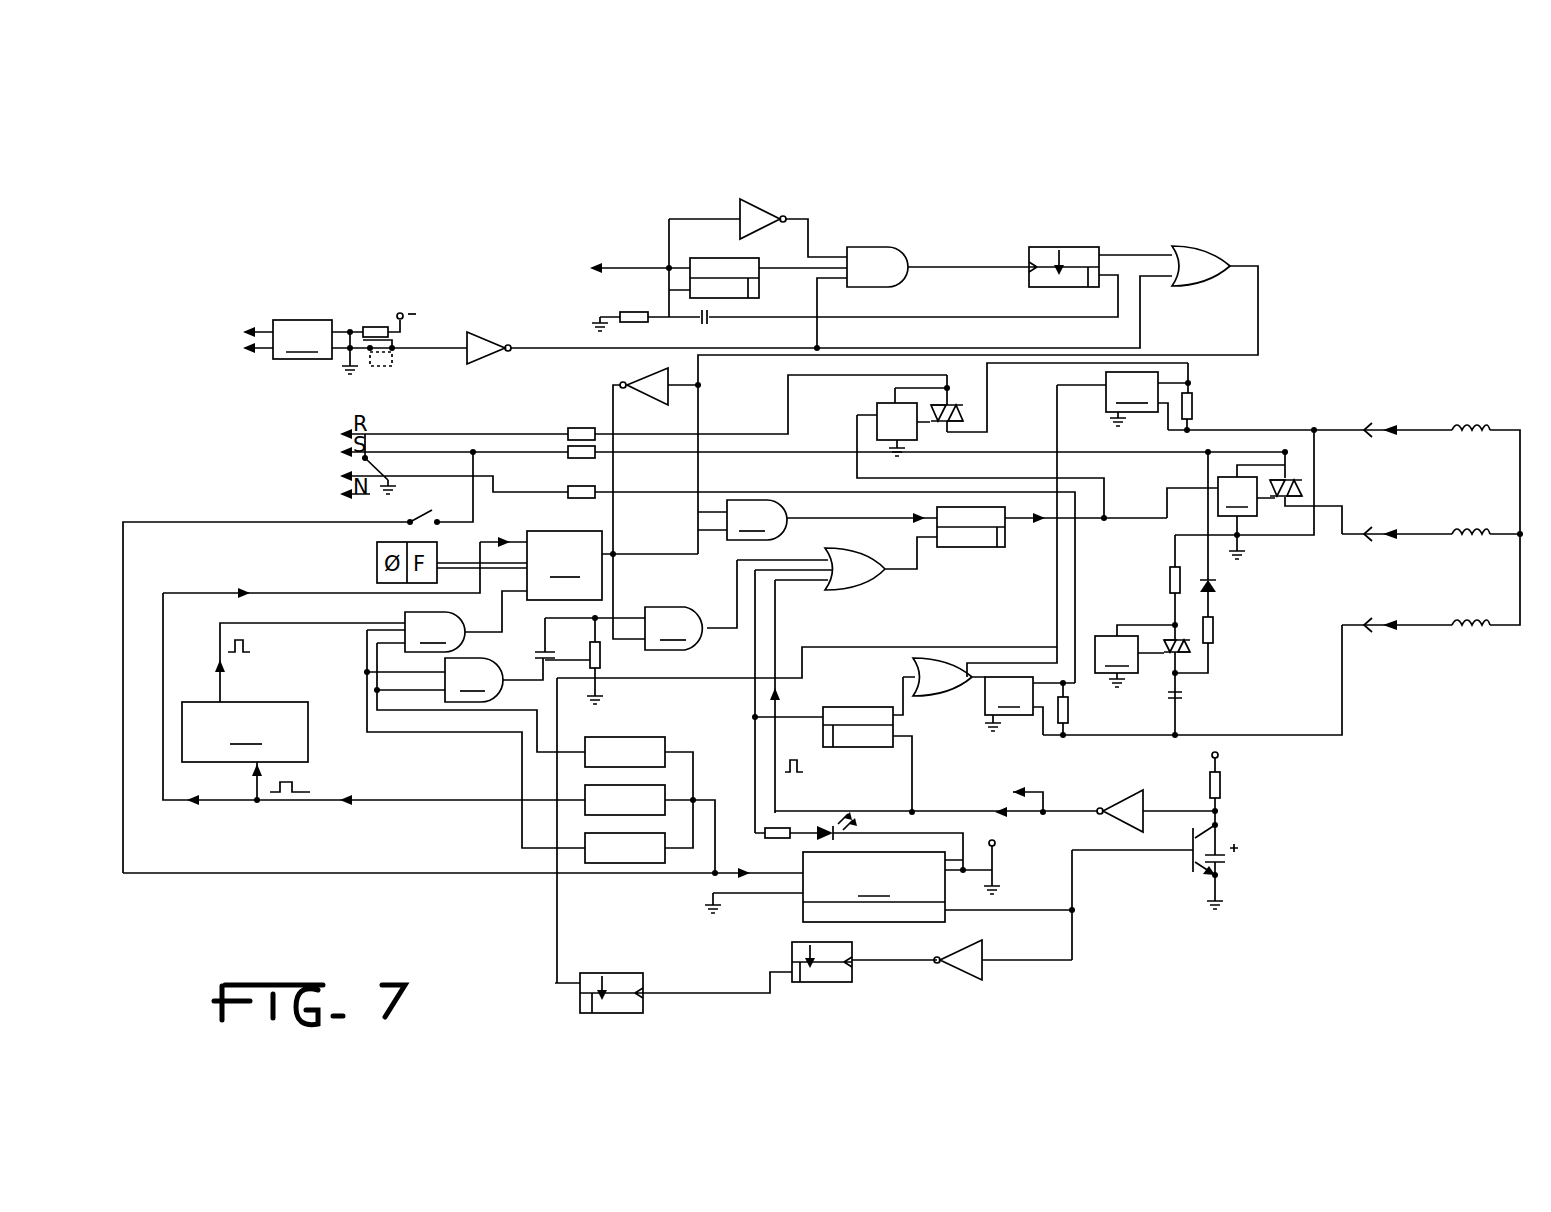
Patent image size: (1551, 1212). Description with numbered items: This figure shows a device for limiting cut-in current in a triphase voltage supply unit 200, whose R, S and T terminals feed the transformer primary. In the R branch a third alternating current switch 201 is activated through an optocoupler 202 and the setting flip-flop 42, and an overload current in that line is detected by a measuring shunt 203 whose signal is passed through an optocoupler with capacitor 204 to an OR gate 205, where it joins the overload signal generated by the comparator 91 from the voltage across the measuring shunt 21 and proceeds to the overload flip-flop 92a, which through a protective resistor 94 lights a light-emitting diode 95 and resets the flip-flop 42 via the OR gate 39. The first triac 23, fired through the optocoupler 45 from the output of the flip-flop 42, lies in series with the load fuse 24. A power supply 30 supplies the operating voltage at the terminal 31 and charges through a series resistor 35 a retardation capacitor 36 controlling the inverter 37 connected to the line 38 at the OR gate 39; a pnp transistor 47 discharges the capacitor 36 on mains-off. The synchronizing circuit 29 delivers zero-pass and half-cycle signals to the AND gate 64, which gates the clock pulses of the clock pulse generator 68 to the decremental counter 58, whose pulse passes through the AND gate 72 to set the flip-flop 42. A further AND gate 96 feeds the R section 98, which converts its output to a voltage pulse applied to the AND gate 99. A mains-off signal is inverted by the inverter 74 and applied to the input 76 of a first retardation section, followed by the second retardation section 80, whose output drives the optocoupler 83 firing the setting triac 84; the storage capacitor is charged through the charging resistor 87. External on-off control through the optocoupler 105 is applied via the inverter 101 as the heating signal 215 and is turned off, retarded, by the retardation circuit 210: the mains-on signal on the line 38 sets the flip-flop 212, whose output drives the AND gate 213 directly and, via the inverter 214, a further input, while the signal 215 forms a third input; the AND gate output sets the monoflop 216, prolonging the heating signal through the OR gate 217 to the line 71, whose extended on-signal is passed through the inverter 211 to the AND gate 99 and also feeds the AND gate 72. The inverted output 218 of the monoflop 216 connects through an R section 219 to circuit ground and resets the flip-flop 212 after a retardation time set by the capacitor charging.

The optocoupler 105 is at (287, 339).
The terminal 31 is at (398, 312).
The inverter 101 is at (490, 336).
The heating signal 215 is at (532, 347).
The mains-on signal line 38 is at (592, 265).
The flip-flop 212 is at (720, 258).
The inverter 214 is at (770, 207).
The AND gate 213 is at (887, 245).
The retardation circuit 210 is at (925, 242).
The monoflop 216 is at (1052, 246).
The OR gate 217 is at (1212, 246).
The inverted output 218 is at (1108, 288).
The R section 219 is at (648, 325).
The line 71 is at (1262, 300).
The triphase voltage supply unit 200 is at (1348, 382).
The inverter 211 is at (640, 388).
The load fuse 24 is at (568, 492).
The optocoupler 202 is at (875, 410).
The third alternating current switch 201 is at (965, 405).
The optocoupler with capacitor 204 is at (1079, 524).
The measuring shunt 203 is at (1194, 406).
The first triac 23 is at (1298, 486).
The optocoupler 45 is at (1212, 518).
The AND gate 72 is at (817, 520).
The setting flip-flop 42 is at (960, 547).
The OR gate 39 is at (850, 588).
The decremental counter 58 is at (430, 565).
The AND gate 64 is at (447, 621).
The AND gate 99 is at (641, 605).
The R section 98 is at (601, 654).
The AND gate 96 is at (455, 680).
The clock pulse generator 68 is at (293, 713).
The synchronizing circuit 29 is at (668, 728).
The OR gate 205 is at (916, 672).
The comparator 91 is at (1030, 706).
The measuring shunt 21 is at (1068, 710).
The setting triac 84 is at (1168, 640).
The optocoupler 83 is at (1135, 656).
The charging resistor 87 is at (1215, 628).
The overload flip-flop 92a is at (862, 740).
The light-emitting diode 95 is at (826, 824).
The resistor 94 is at (768, 838).
The power supply 30 is at (597, 877).
The inverter 37 is at (1128, 800).
The series resistor 35 is at (1222, 786).
The retardation capacitor 36 is at (1228, 857).
The pnp transistor 47 is at (1190, 862).
The second retardation section 80 is at (614, 973).
The input of first retardation section 76 is at (790, 952).
The inverter 74 is at (985, 952).